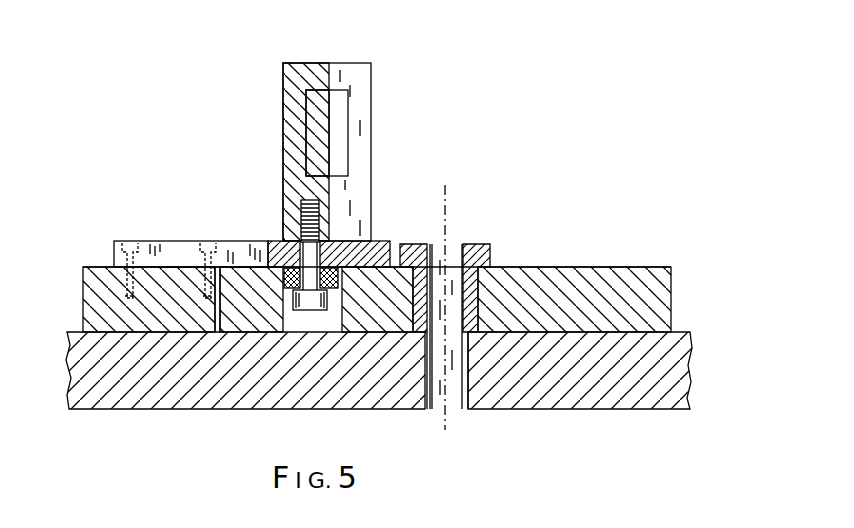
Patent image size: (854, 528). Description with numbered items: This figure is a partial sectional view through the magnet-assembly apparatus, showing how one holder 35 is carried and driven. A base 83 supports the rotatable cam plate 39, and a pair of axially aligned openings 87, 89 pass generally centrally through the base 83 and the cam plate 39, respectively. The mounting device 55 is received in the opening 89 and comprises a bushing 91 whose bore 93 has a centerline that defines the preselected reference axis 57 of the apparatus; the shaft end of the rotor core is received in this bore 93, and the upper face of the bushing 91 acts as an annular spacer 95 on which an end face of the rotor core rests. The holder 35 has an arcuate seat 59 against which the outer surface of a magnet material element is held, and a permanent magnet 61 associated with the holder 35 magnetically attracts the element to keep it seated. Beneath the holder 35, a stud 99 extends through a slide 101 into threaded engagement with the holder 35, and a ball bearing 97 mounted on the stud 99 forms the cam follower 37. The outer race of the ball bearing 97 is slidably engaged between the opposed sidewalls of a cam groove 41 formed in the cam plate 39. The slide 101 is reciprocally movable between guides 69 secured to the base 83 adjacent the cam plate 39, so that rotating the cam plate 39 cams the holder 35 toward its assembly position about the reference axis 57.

The holder 35 is at (284, 184).
The cam follower 37 is at (304, 310).
The cam plate 39 is at (672, 286).
The cam groove 41 is at (342, 314).
The mounting device 55 is at (473, 339).
The preselected reference axis 57 is at (446, 196).
The arcuate seat 59 is at (332, 80).
The permanent magnet 61 is at (285, 140).
The guide 69 is at (243, 241).
The base 83 is at (80, 372).
The opening 87 is at (432, 396).
The opening 89 is at (480, 302).
The bushing 91 is at (492, 262).
The bore 93 is at (455, 258).
The annular spacer 95 is at (470, 248).
The ball bearing 97 is at (283, 284).
The stud 99 is at (290, 306).
The slide 101 is at (355, 240).